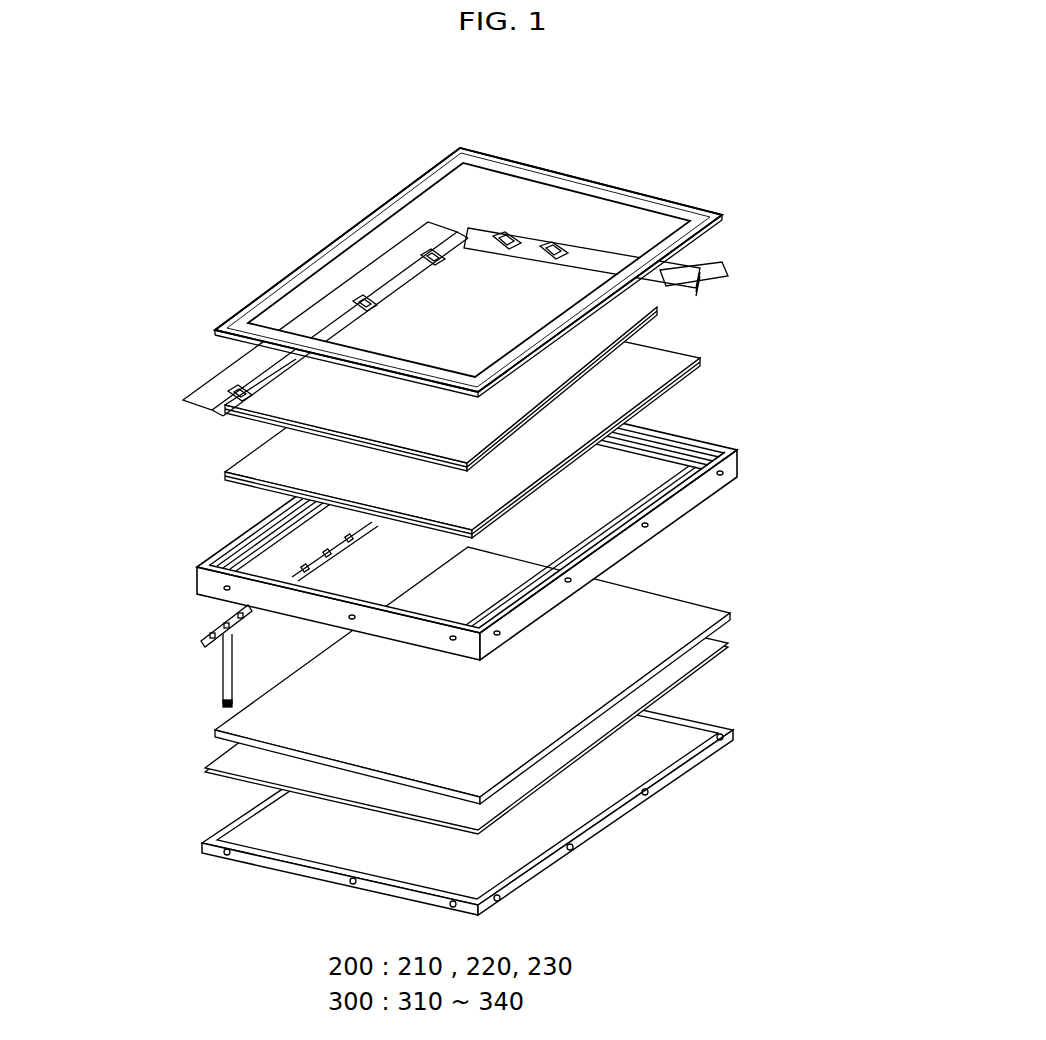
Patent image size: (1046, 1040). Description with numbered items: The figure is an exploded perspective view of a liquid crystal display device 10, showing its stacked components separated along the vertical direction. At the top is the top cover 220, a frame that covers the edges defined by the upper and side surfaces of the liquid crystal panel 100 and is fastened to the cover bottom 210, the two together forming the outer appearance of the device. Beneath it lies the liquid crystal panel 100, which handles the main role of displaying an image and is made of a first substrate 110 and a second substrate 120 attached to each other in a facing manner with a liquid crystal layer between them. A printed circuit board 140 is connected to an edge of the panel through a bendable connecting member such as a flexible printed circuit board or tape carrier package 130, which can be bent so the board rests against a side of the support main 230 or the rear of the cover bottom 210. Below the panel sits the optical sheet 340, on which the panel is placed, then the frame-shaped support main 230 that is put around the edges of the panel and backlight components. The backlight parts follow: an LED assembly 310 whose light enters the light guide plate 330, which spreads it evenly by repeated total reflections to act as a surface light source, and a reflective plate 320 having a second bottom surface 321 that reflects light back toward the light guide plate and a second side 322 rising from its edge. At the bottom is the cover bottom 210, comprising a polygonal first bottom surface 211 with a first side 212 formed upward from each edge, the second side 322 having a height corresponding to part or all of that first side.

The liquid crystal display device 10 is at (205, 265).
The liquid crystal panel 100 is at (840, 188).
The first substrate 110 is at (660, 307).
The second substrate 120 is at (668, 314).
The flexible printed circuit board or tape carrier package 130 is at (587, 243).
The printed circuit board 140 is at (704, 270).
The cover bottom 210 is at (842, 755).
The first bottom surface 211 is at (658, 757).
The first side 212 is at (700, 717).
The top cover 220 is at (587, 176).
The support main 230 is at (740, 455).
The LED assembly 310 is at (211, 668).
The reflective plate 320 is at (862, 633).
The second bottom surface 321 is at (653, 687).
The second side 322 is at (728, 645).
The light guide plate 330 is at (683, 607).
The optical sheet 340 is at (702, 360).